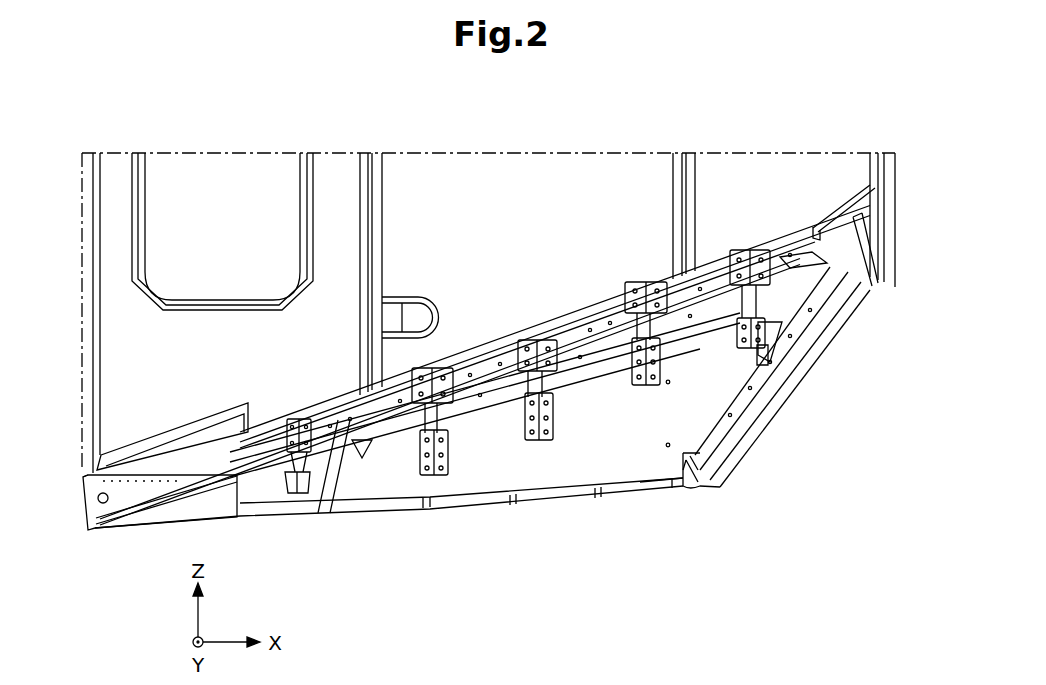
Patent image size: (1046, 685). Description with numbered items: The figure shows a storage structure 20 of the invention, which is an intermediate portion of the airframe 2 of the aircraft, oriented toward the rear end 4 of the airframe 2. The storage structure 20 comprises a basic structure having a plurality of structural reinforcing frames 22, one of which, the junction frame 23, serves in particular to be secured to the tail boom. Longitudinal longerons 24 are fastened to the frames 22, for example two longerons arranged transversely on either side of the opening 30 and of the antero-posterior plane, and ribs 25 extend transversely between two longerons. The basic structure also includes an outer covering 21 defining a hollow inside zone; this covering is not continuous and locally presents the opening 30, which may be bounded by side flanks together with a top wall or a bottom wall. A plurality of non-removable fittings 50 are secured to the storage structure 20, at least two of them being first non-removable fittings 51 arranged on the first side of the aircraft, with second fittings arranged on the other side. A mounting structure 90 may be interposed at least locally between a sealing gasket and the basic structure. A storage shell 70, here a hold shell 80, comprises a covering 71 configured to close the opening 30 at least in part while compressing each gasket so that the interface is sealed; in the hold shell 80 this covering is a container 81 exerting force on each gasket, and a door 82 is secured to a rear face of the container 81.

The airframe 2 is at (125, 368).
The rear end 4 is at (953, 367).
The storage structure 20 is at (811, 130).
The outer covering 21 is at (617, 178).
The structural reinforcing frames 22 is at (88, 165).
The junction frame 23 is at (880, 170).
The longitudinal longerons 24 is at (135, 520).
The ribs 25 is at (880, 222).
The opening 30 is at (444, 318).
The non-removable fittings 50 is at (485, 366).
The first non-removable fittings 51 is at (752, 264).
The storage shell 70 is at (768, 374).
The covering 71 is at (766, 441).
The hold shell 80 is at (740, 448).
The container 81 is at (645, 470).
The door 82 is at (785, 412).
The mounting structure 90 is at (368, 417).